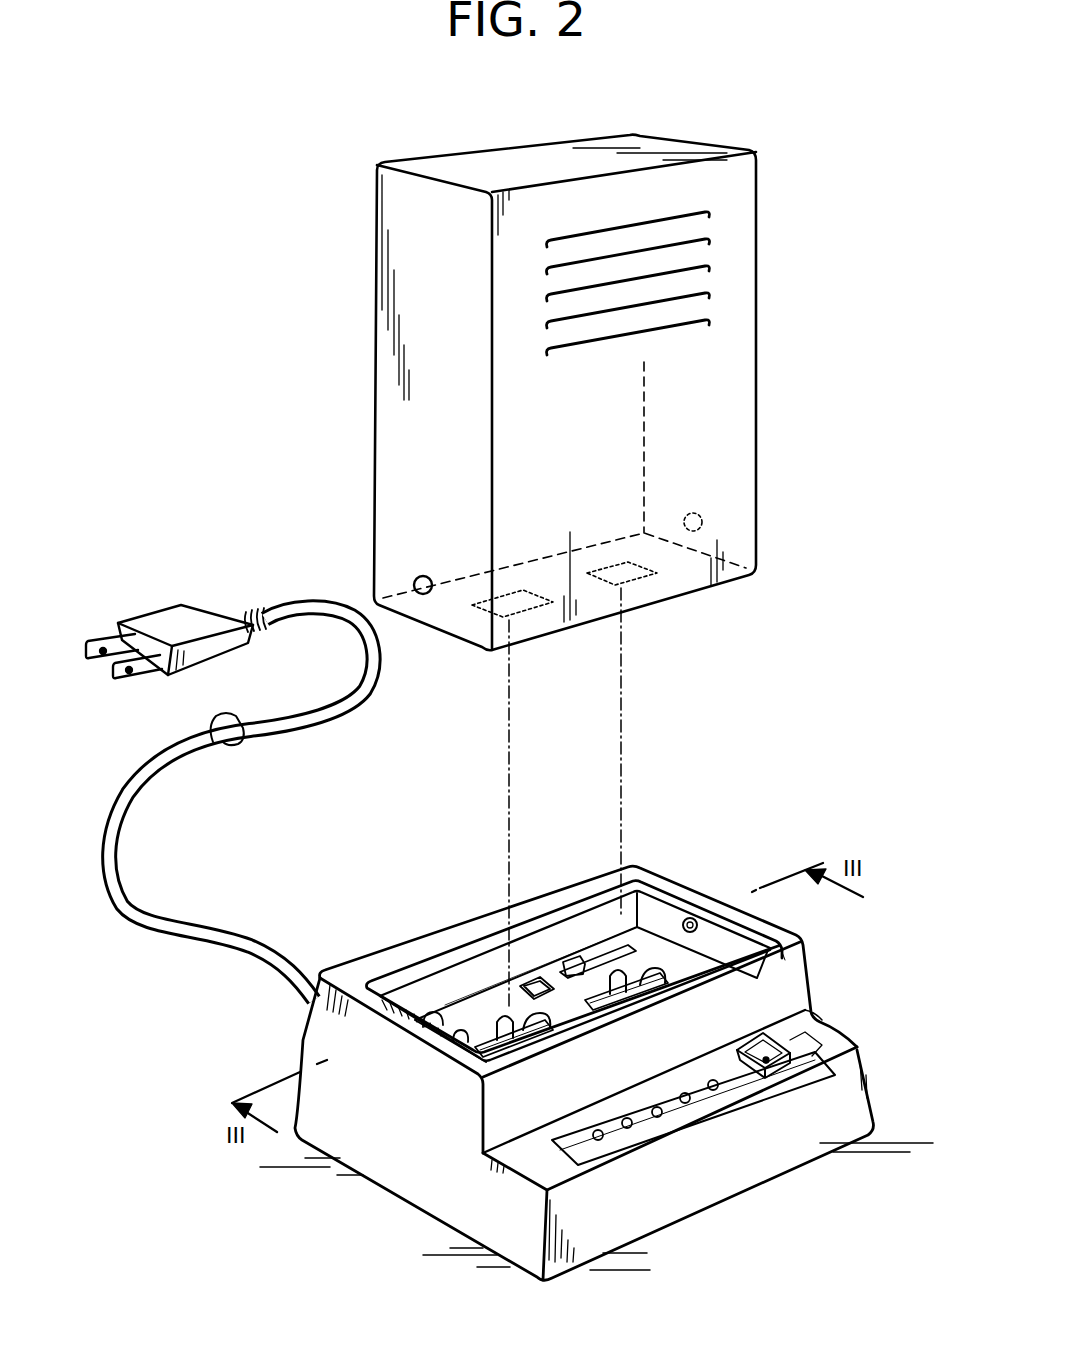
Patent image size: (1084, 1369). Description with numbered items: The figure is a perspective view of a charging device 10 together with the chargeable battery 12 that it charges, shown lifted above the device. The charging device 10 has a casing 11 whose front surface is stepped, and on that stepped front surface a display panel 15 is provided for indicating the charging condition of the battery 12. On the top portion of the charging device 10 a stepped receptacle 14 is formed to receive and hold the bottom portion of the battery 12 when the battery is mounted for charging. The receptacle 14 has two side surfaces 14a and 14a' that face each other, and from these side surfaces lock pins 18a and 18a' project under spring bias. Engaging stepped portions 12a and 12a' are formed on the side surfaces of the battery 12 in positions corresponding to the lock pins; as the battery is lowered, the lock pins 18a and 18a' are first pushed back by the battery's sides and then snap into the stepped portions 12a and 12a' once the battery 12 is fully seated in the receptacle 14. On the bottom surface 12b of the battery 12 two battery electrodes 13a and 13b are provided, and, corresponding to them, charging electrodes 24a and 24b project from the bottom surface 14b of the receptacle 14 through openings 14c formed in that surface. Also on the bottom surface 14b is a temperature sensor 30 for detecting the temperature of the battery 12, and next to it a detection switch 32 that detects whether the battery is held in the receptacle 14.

The charging device 10 is at (760, 1190).
The casing 11 is at (790, 977).
The chargeable battery 12 is at (751, 340).
The engaging stepped portion 12a is at (749, 512).
The engaging stepped portion 12a' is at (424, 631).
The bottom surface of the battery 12b is at (673, 583).
The battery electrode 13a is at (523, 613).
The battery electrode 13b is at (640, 580).
The stepped receptacle 14 is at (472, 967).
The side surface of the receptacle 14a is at (564, 916).
The side surface of the receptacle 14a' is at (416, 1063).
The bottom surface of the receptacle 14b is at (755, 952).
The opening 14c is at (550, 1045).
The display panel 15 is at (800, 1050).
The lock pin 18a is at (713, 890).
The lock pin 18a' is at (402, 965).
The charging electrode 24a is at (520, 1050).
The charging electrode 24b is at (636, 1000).
The temperature sensor 30 is at (532, 978).
The detection switch 32 is at (588, 945).